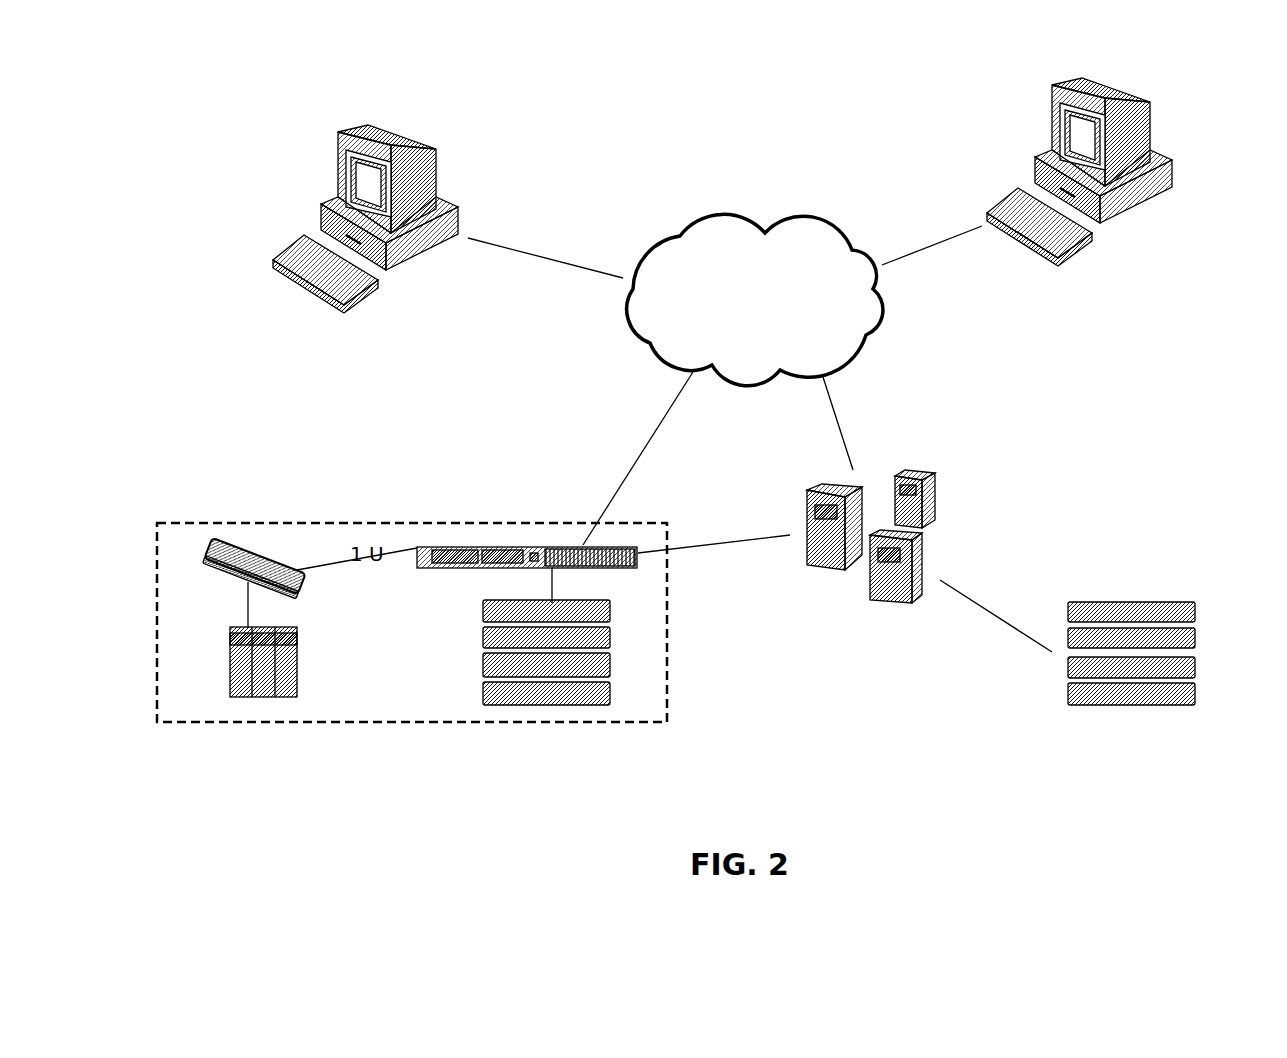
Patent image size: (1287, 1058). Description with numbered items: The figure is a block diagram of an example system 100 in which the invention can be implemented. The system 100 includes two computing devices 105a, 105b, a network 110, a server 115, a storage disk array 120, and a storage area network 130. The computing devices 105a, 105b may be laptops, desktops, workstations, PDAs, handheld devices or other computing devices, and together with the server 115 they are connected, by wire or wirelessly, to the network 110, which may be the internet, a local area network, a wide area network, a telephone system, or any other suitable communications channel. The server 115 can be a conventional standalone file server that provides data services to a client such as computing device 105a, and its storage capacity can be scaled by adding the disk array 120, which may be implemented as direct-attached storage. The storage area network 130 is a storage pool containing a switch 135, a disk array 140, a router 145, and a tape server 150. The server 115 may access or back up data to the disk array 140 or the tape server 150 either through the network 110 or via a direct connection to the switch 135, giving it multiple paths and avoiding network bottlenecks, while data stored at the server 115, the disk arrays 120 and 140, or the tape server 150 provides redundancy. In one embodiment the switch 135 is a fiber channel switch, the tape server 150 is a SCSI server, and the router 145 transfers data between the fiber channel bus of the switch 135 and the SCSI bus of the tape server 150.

The system 100 is at (1033, 820).
The computing device 105a is at (282, 290).
The computing device 105b is at (1062, 256).
The network 110 is at (755, 299).
The server 115 is at (913, 620).
The storage disk array 120 is at (1190, 600).
The storage area network 130 is at (433, 723).
The switch 135 is at (540, 547).
The disk array 140 is at (577, 695).
The router 145 is at (222, 536).
The tape server 150 is at (243, 697).